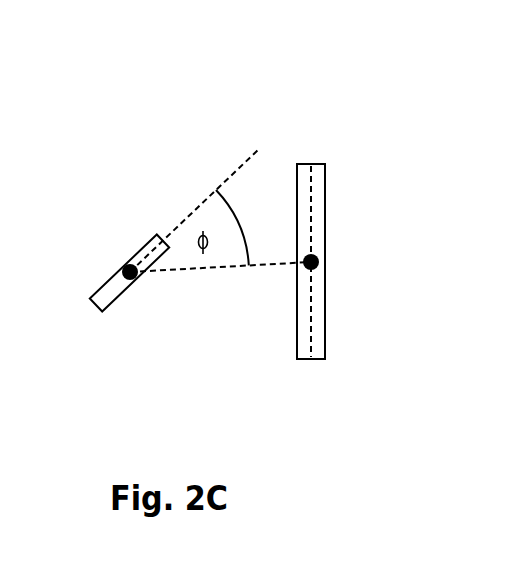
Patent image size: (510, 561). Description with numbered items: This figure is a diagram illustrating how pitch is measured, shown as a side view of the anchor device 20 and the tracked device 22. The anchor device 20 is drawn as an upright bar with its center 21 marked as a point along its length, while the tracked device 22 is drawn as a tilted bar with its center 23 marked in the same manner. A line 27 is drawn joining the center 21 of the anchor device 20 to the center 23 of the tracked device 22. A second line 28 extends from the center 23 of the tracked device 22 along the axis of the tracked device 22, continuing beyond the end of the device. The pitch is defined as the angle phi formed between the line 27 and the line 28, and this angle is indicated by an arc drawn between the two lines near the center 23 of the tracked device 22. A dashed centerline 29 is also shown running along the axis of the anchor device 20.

The anchor device 20 is at (326, 224).
The center of anchor device 21 is at (319, 268).
The tracked device 22 is at (107, 308).
The center of tracked device 23 is at (118, 272).
The line 27 is at (183, 277).
The line 28 is at (218, 182).
The axis line of first link 29 is at (310, 183).